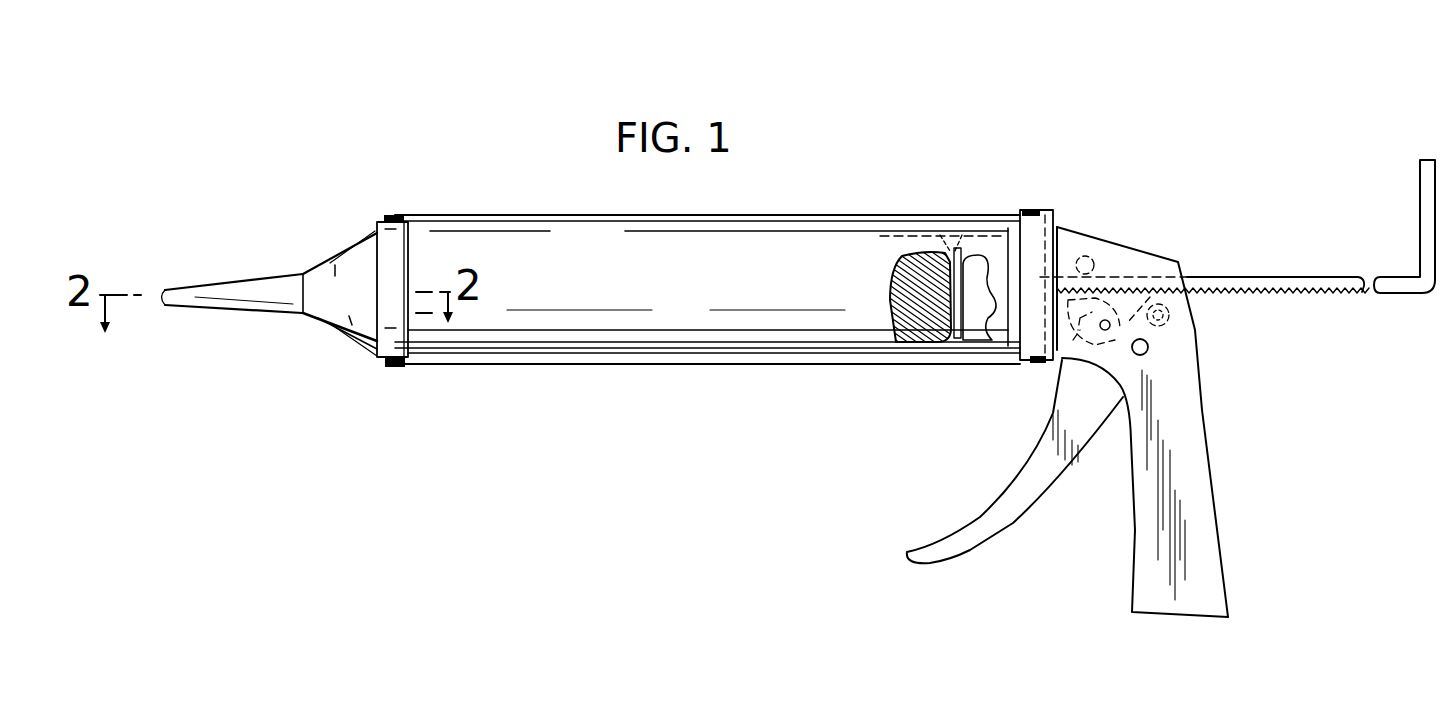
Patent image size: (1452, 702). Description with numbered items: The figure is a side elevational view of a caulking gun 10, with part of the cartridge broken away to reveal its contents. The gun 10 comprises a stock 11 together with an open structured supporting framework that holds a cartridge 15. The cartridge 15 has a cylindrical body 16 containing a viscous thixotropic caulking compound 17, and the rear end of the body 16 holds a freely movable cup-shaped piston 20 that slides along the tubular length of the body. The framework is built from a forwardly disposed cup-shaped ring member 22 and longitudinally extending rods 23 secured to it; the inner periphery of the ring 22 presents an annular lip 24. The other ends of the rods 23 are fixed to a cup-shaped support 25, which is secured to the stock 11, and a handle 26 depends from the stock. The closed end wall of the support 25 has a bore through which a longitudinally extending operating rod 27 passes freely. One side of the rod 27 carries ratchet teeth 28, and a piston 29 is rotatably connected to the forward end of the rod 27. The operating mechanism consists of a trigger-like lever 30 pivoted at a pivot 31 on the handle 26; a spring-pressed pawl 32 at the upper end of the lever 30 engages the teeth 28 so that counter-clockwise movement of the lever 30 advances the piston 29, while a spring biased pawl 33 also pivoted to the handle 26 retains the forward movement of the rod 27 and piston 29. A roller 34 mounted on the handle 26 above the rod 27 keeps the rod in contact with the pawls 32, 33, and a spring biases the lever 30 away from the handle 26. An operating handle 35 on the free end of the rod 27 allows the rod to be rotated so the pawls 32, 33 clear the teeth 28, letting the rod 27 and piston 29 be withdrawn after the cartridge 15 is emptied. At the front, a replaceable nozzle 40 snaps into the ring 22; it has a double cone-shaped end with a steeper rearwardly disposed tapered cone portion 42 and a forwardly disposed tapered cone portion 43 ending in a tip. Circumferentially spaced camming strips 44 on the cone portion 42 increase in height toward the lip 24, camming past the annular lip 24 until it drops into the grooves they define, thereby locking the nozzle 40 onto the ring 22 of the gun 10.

The caulking gun 10 is at (954, 157).
The stock 11 is at (1137, 237).
The cartridge 15 is at (700, 343).
The cylindrical body 16 is at (602, 344).
The caulking compound 17 is at (913, 322).
The cup-shaped piston 20 is at (953, 338).
The ring member 22 is at (417, 245).
The rods 23 is at (512, 214).
The annular lip 24 is at (377, 357).
The cup-shaped support 25 is at (1051, 222).
The handle 26 is at (1197, 528).
The operating rod 27 is at (1242, 278).
The ratchet teeth 28 is at (1264, 294).
The piston 29 is at (970, 253).
The trigger-like lever 30 is at (1005, 512).
The pivot 31 is at (1148, 348).
The spring-pressed pawl 32 is at (1150, 297).
The spring biased pawl 33 is at (1073, 340).
The roller 34 is at (1090, 258).
The operating handle 35 is at (1428, 183).
The replaceable nozzle 40 is at (297, 321).
The rearwardly disposed tapered cone portion 42 is at (335, 275).
The forwardly disposed tapered cone portion 43 is at (225, 287).
The camming strips 44 is at (361, 237).